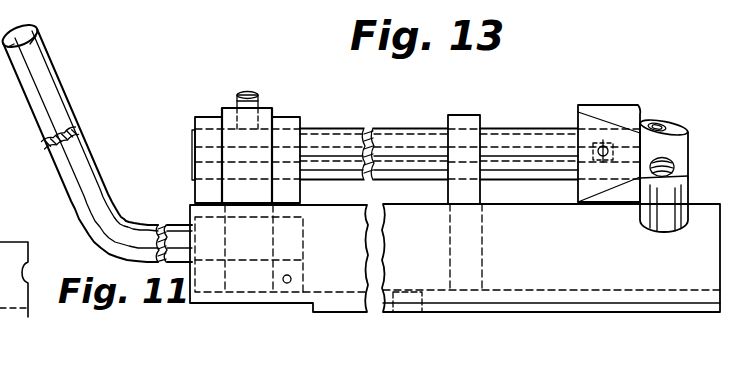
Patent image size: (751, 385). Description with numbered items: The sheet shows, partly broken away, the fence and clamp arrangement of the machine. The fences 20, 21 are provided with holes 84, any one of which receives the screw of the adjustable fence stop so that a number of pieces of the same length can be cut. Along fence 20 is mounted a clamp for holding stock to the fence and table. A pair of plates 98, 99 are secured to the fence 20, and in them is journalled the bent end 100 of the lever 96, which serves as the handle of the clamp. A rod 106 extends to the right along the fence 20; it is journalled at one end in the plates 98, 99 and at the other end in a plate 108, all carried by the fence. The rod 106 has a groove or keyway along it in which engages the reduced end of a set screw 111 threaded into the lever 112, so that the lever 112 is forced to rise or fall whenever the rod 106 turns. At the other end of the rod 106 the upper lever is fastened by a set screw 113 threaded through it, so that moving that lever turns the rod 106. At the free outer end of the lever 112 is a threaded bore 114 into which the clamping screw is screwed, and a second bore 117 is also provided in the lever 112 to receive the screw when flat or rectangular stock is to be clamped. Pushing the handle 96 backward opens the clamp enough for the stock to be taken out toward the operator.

In FIG. 13, the fence 20 is at (575, 246).
In FIG. 11, the fence 21 is at (13, 247).
In FIG. 11, the holes 84 is at (27, 270).
In FIG. 11, the lever 96 is at (77, 118).
In FIG. 13, the plate 98 is at (192, 191).
In FIG. 13, the plate 99 is at (295, 197).
In FIG. 13, the bent end 100 is at (303, 237).
In FIG. 13, the rod 106 is at (389, 128).
In FIG. 13, the plate 108 is at (467, 116).
In FIG. 13, the set screw 111 is at (603, 142).
In FIG. 13, the lever 112 is at (648, 118).
In FIG. 13, the set screw 113 is at (253, 93).
In FIG. 13, the threaded bore 114 is at (687, 175).
In FIG. 13, the second bore 117 is at (684, 128).